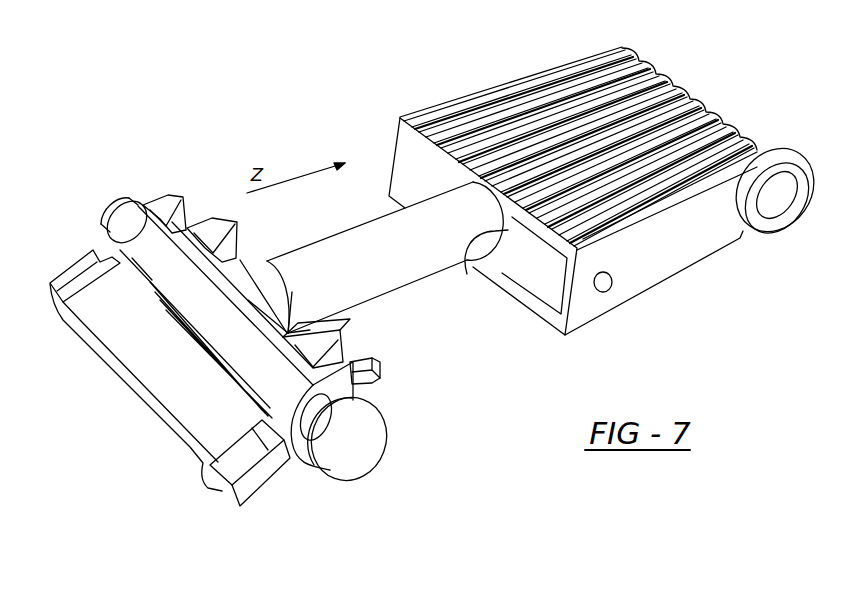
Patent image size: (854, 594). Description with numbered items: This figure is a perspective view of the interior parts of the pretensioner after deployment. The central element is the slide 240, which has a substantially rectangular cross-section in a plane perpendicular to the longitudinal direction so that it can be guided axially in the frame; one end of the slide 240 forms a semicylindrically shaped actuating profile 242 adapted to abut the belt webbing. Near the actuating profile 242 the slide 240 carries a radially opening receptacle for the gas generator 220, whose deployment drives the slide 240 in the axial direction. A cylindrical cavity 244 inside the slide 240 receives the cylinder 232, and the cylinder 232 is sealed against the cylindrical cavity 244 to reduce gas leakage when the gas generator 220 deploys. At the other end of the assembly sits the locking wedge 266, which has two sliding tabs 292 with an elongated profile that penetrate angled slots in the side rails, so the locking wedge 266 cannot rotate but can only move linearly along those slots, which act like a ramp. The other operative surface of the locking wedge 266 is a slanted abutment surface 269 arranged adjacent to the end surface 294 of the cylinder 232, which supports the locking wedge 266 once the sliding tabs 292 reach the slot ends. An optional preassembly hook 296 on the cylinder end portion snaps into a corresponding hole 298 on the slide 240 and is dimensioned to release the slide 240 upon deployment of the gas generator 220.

The gas generator 220 is at (778, 199).
The cylinder 232 is at (390, 275).
The slide 240 is at (670, 250).
The actuating profile 242 is at (705, 101).
The cylindrical cavity 244 is at (467, 274).
The locking wedge 266 is at (173, 382).
The abutment surface 269 is at (296, 442).
The sliding tabs 292 is at (73, 262).
The end surface 294 is at (296, 452).
The preassembly hook 296 is at (377, 381).
The hole 298 is at (605, 286).